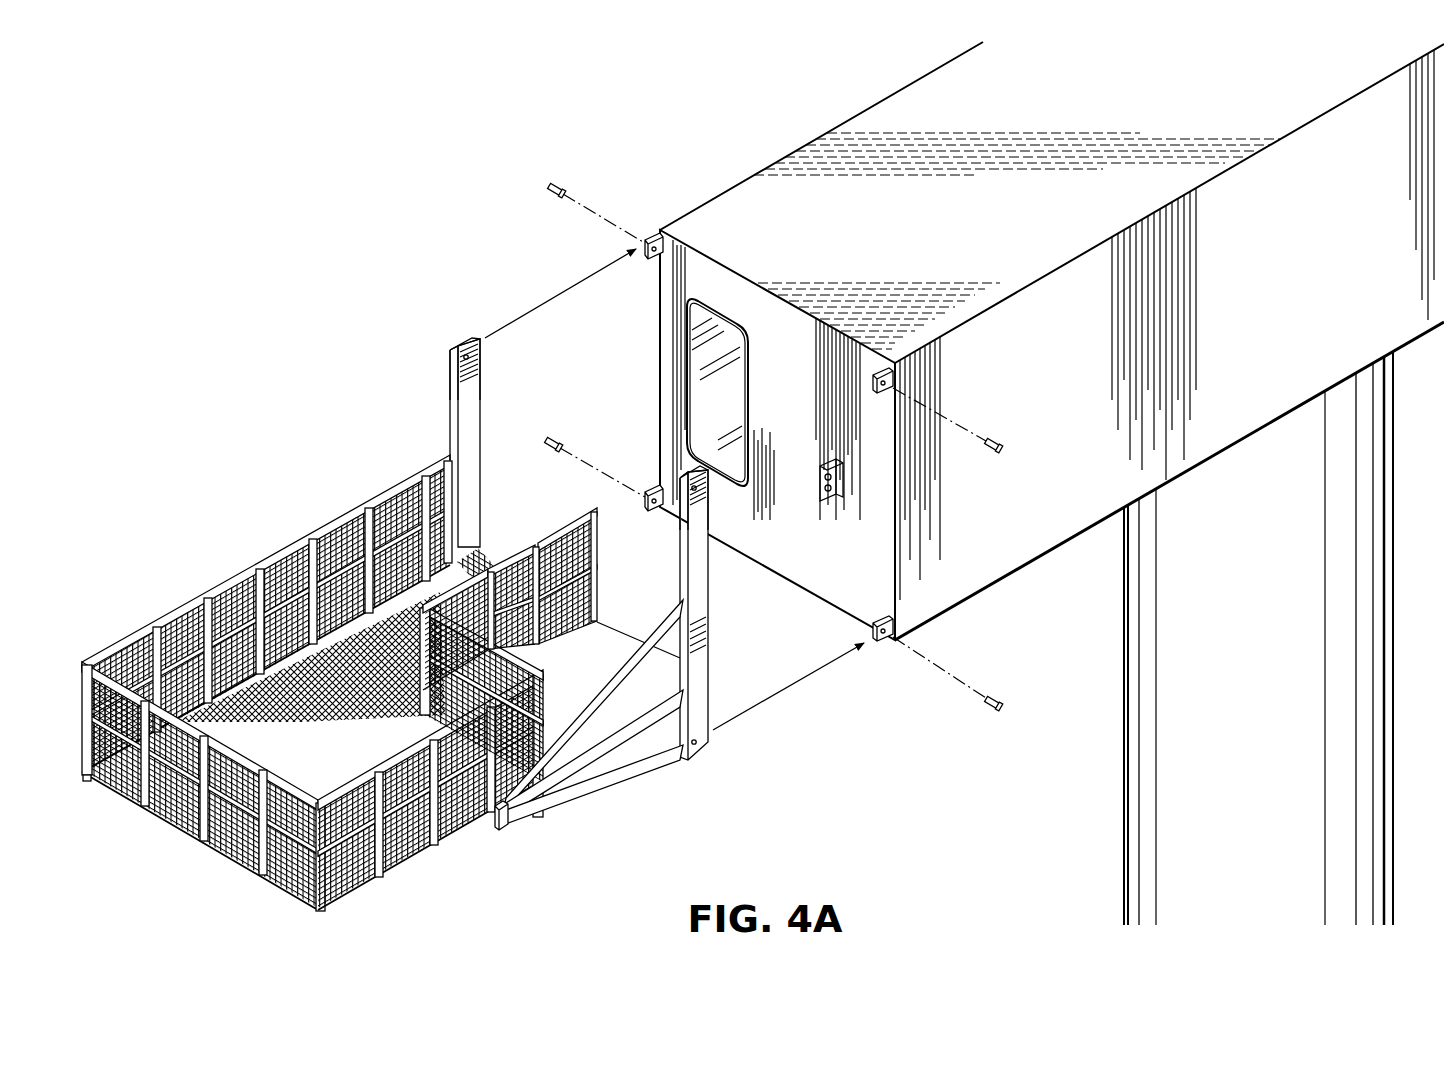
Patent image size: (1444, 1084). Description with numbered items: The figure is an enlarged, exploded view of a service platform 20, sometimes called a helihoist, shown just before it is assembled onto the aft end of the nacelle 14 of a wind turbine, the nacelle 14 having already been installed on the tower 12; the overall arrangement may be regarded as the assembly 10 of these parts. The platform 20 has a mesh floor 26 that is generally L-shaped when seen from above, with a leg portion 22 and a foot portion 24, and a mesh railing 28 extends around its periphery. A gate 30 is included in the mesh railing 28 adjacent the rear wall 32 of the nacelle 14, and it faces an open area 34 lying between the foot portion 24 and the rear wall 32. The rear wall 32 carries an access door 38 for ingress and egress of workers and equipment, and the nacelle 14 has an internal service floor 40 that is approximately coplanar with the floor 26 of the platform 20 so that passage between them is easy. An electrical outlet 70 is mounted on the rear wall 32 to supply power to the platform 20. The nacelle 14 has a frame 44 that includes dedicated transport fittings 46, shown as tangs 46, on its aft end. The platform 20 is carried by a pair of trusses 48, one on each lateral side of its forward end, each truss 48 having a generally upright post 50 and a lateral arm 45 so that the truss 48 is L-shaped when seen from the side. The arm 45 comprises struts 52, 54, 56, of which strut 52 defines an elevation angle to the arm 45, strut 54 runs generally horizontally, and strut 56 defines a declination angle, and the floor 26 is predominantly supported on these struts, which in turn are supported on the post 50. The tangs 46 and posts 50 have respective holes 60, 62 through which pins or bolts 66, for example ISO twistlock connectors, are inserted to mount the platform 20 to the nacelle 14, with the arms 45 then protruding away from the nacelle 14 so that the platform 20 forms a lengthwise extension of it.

The loading system 10 is at (276, 111).
The tower 12 is at (1394, 702).
The nacelle 14 is at (810, 96).
The service platform 20 is at (274, 522).
The leg portion 22 is at (288, 672).
The foot portion 24 is at (362, 892).
The floor 26 is at (300, 770).
The mesh railing 28 is at (222, 848).
The gate 30 is at (516, 562).
The rear wall 32 is at (775, 400).
The open area 34 is at (614, 666).
The access door 38 is at (705, 350).
The internal service floor 40 is at (725, 462).
The frame 44 is at (750, 170).
The lateral arm 45 is at (610, 795).
The transport fittings 46 is at (650, 236).
The truss 48 is at (447, 434).
The upright post 50 is at (448, 366).
The strut 52 is at (655, 635).
The strut 54 is at (692, 707).
The strut 56 is at (530, 812).
The holes 60 is at (651, 258).
The holes 62 is at (470, 358).
The pins or bolts 66 is at (557, 185).
The electrical outlet 70 is at (820, 474).